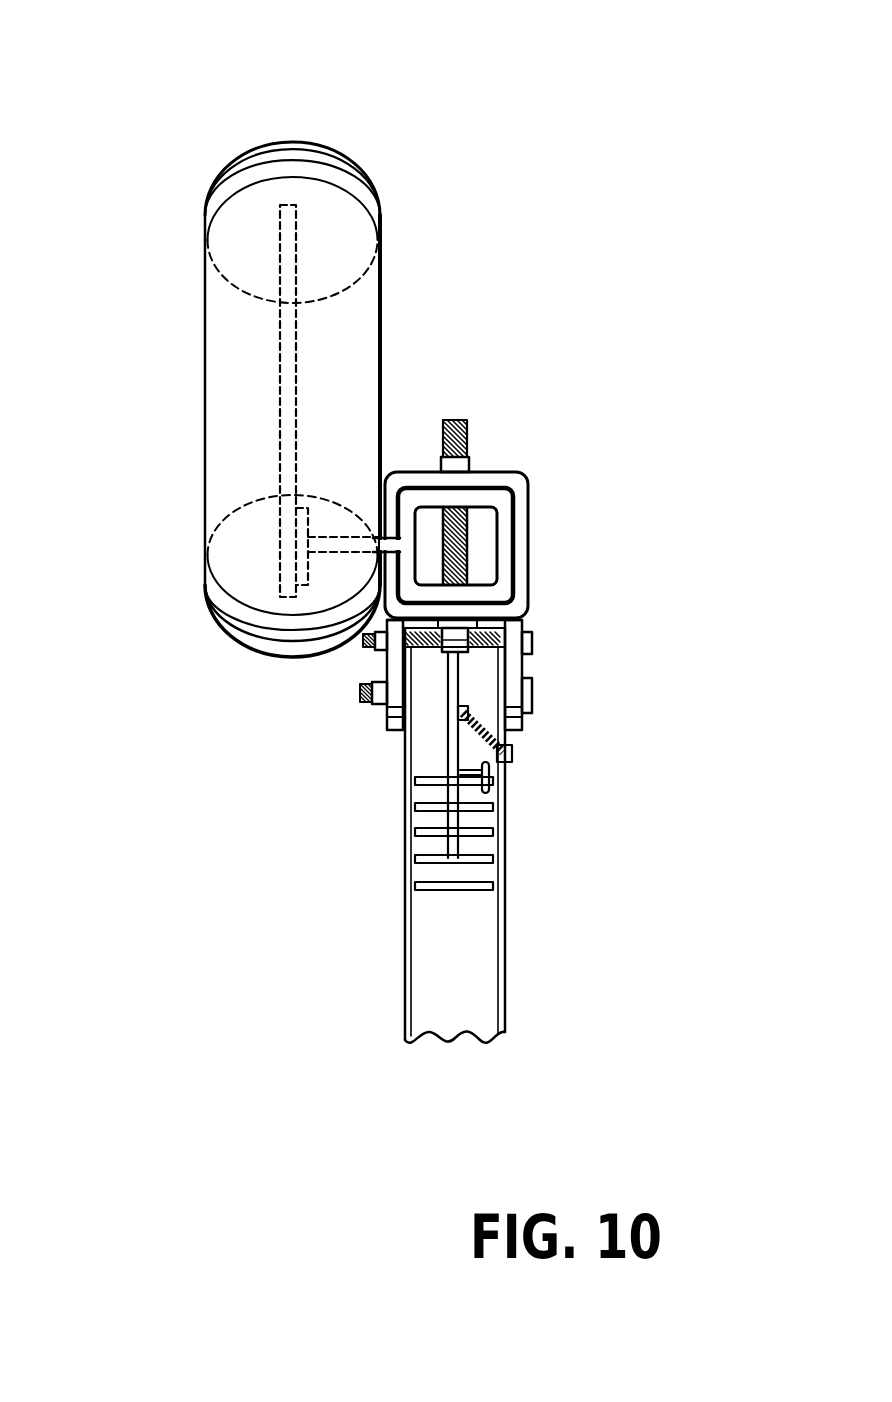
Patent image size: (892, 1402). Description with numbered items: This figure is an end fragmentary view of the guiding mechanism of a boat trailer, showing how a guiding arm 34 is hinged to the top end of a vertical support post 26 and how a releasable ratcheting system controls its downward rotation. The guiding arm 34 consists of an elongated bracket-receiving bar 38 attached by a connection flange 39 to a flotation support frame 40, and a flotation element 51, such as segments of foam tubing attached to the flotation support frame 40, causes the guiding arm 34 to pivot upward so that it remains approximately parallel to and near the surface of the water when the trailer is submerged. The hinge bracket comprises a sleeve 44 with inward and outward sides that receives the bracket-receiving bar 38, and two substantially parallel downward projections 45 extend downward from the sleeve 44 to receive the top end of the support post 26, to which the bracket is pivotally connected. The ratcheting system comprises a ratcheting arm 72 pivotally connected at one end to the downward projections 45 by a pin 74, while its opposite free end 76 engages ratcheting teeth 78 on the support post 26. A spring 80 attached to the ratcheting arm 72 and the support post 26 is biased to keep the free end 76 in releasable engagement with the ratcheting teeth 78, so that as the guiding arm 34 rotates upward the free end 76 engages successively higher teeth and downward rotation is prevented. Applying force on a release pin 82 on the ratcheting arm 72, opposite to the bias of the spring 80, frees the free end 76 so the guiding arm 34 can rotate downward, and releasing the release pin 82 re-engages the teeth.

The support post 26 is at (505, 990).
The guiding arm 34 is at (356, 331).
The bracket-receiving bar 38 is at (524, 519).
The connection flange 39 is at (345, 532).
The flotation support frame 40 is at (270, 347).
The sleeve 44 is at (528, 523).
The downward projections 45 is at (385, 662).
The flotation element 51 is at (381, 300).
The ratcheting arm 72 is at (445, 745).
The pin 74 is at (533, 645).
The free end 76 is at (457, 862).
The ratcheting teeth 78 is at (445, 886).
The spring 80 is at (510, 737).
The release pin 82 is at (505, 768).